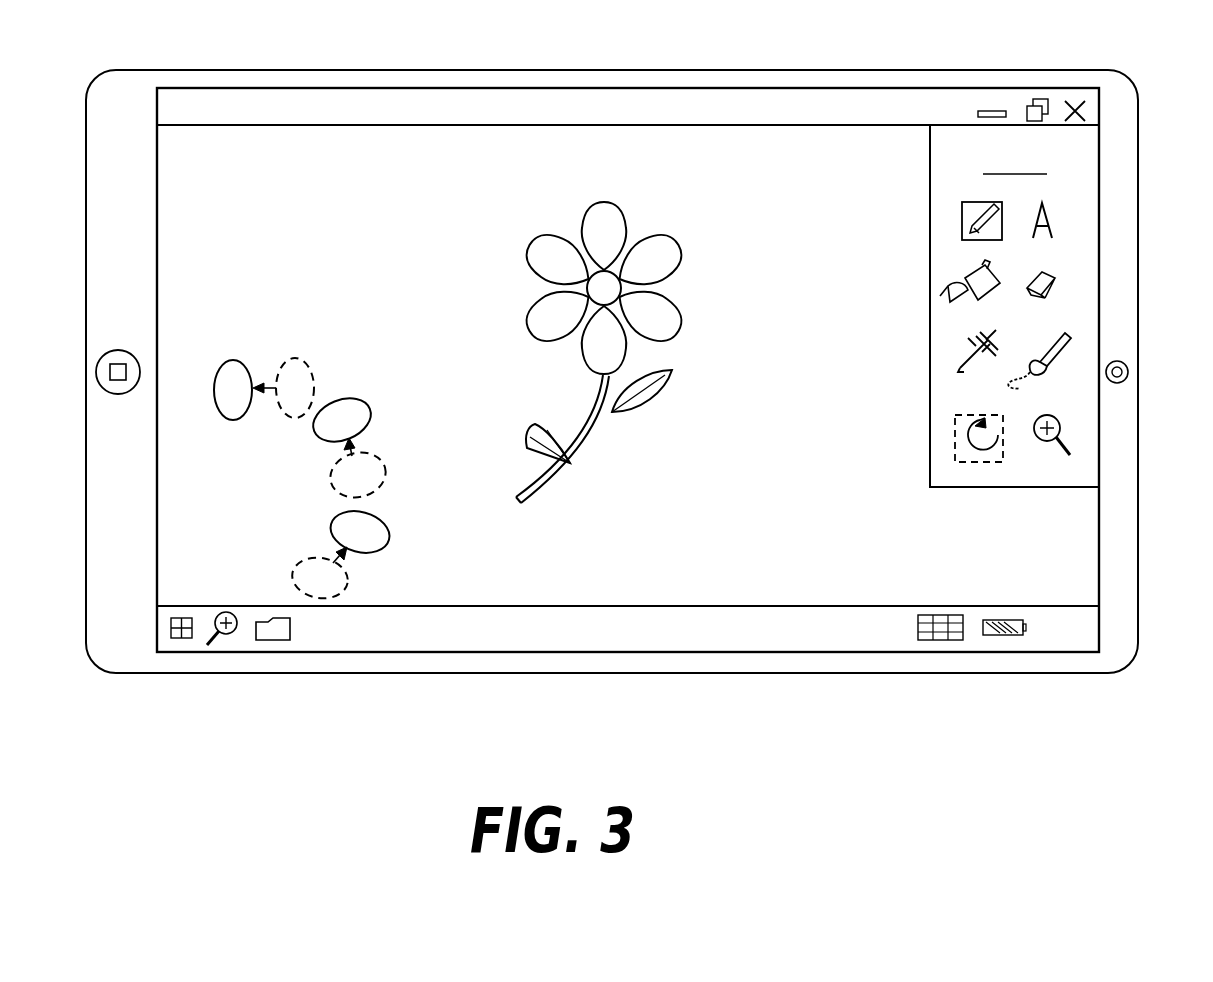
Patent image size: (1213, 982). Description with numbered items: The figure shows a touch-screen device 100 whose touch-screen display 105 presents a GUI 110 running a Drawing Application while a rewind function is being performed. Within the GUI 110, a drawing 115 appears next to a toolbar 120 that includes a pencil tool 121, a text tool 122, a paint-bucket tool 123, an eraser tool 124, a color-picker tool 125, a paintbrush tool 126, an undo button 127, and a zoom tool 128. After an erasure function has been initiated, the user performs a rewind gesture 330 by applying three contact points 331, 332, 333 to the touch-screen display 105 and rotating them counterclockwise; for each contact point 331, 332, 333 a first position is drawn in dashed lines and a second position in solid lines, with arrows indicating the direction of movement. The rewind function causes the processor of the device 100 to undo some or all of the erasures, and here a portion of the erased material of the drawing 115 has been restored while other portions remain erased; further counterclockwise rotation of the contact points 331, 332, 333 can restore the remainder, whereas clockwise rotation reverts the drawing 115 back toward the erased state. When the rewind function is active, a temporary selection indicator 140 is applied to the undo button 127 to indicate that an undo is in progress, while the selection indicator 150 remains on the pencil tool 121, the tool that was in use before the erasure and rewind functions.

The touch-screen device 100 is at (110, 142).
The touch-screen display 105 is at (168, 195).
The GUI 110 is at (232, 250).
The drawing 115 is at (645, 233).
The toolbar 120 is at (1066, 152).
The pencil tool 121 is at (977, 222).
The text tool 122 is at (1052, 225).
The paint-bucket tool 123 is at (950, 290).
The eraser tool 124 is at (1057, 287).
The color-picker tool 125 is at (962, 364).
The paintbrush tool 126 is at (1068, 345).
The undo button 127 is at (972, 436).
The zoom tool 128 is at (1060, 428).
The temporary selection indicator 140 is at (960, 462).
The selection indicator 150 is at (962, 203).
The rewind gesture 330 is at (327, 429).
The contact point 331 is at (233, 420).
The contact point 332 is at (330, 437).
The contact point 333 is at (383, 542).